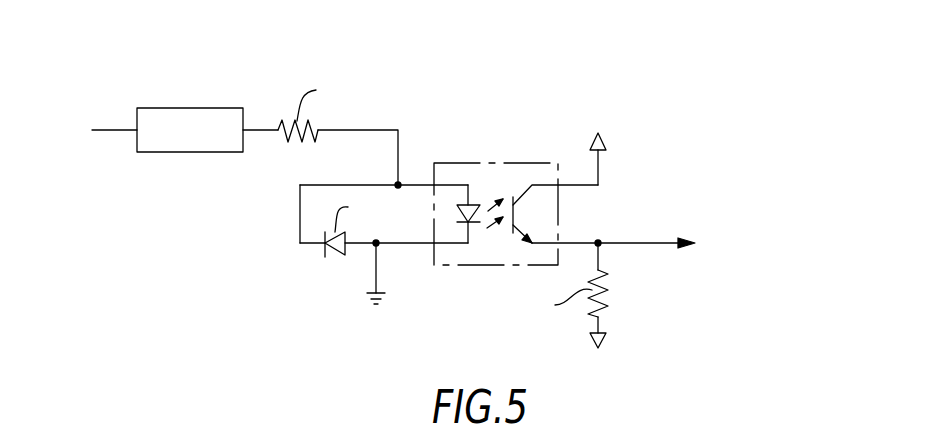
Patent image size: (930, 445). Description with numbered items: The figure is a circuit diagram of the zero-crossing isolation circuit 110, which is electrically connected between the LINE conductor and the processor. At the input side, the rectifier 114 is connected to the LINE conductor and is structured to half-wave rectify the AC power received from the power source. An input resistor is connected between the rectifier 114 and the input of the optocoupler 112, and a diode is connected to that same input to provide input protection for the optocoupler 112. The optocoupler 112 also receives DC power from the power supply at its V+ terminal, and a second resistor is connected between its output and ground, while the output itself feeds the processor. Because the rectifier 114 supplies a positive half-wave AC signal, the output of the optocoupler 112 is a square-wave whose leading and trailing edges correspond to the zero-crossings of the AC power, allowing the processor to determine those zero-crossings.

The zero-crossing isolation circuit 110 is at (153, 62).
The optocoupler 112 is at (525, 162).
The rectifier 114 is at (200, 107).